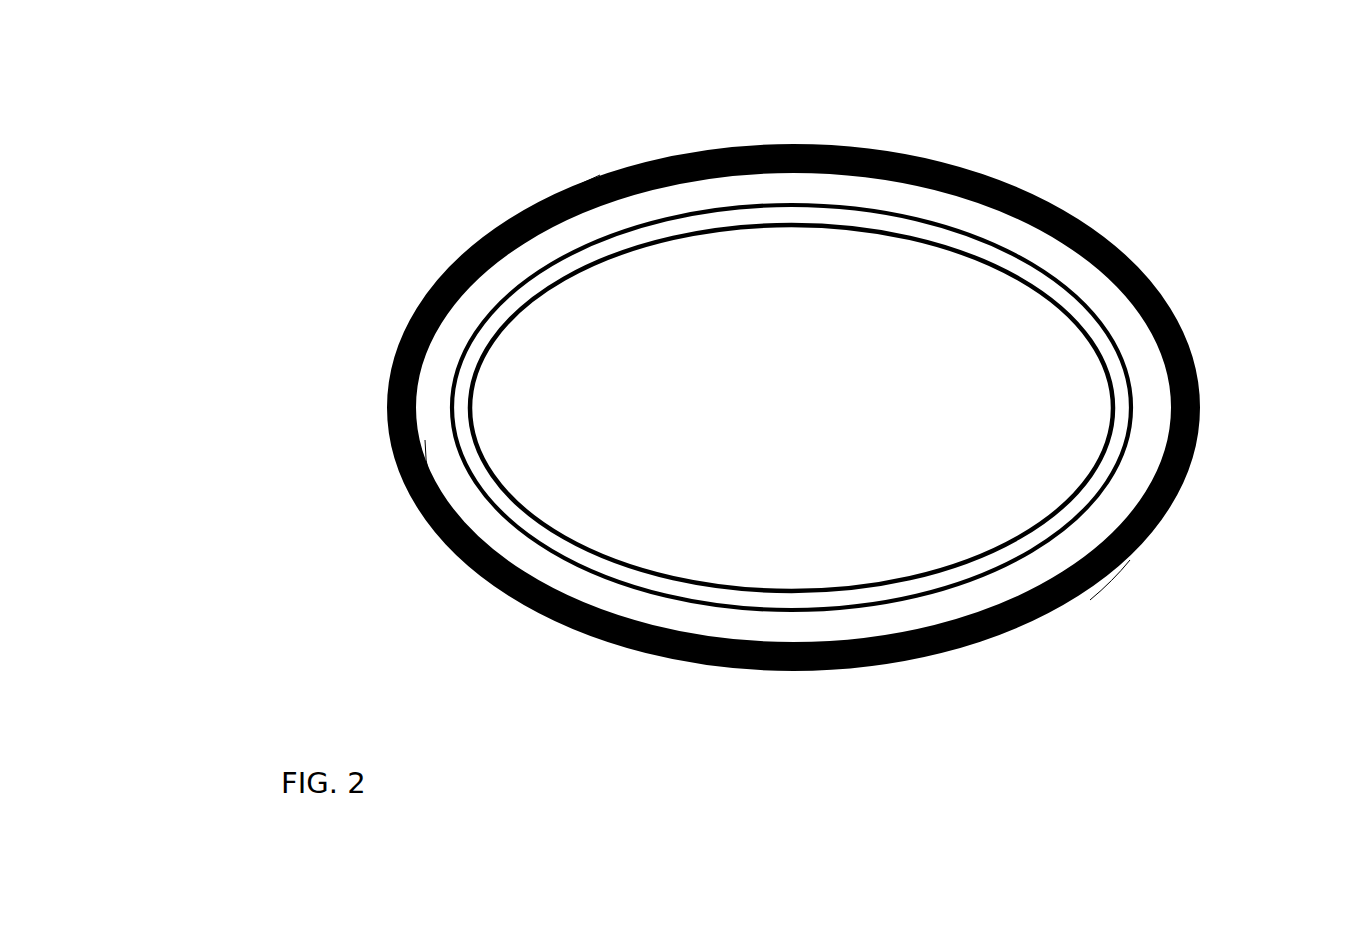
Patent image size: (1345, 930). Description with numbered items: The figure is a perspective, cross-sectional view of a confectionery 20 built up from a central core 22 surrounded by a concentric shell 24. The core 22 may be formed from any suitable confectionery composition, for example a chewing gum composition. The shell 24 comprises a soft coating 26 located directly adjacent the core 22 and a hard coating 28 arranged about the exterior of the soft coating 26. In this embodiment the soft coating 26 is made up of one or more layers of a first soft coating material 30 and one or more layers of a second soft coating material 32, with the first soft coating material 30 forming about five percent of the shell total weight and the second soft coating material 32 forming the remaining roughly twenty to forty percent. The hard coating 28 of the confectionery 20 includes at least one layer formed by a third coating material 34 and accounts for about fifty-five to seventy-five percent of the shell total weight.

The confectionery 20 is at (759, 425).
The core 22 is at (775, 498).
The shell 24 is at (1107, 588).
The soft coating 26 is at (691, 415).
The hard coating 28 is at (484, 202).
The first soft coating material 30 is at (510, 508).
The second soft coating material 32 is at (442, 464).
The third coating material 34 is at (558, 194).